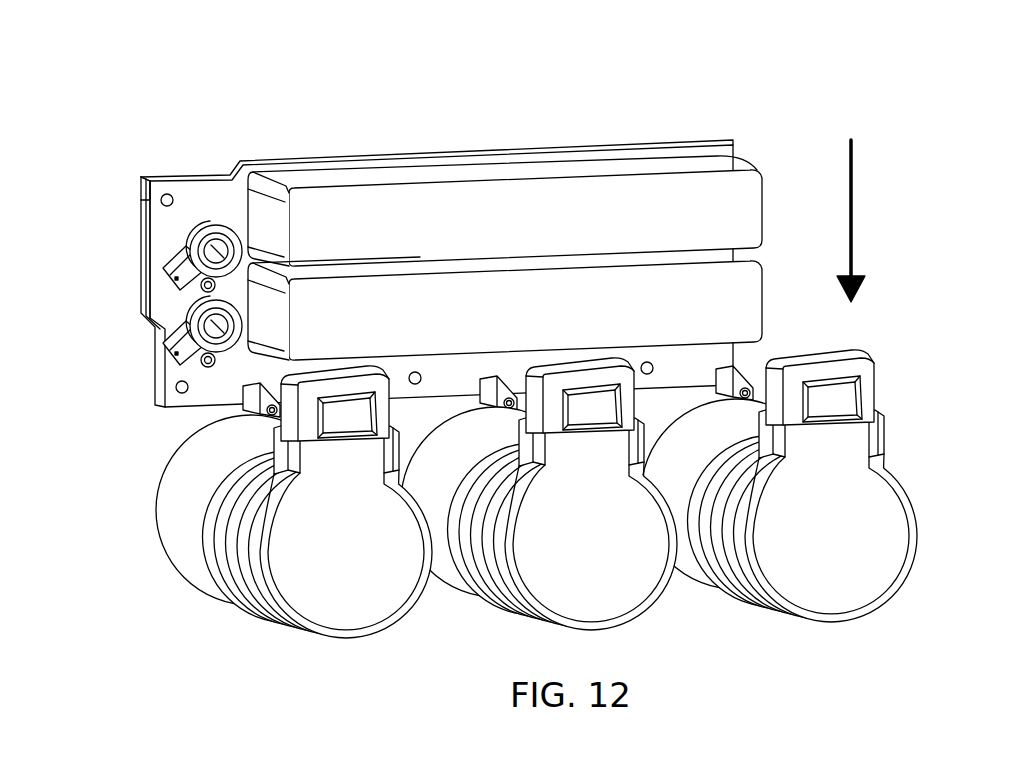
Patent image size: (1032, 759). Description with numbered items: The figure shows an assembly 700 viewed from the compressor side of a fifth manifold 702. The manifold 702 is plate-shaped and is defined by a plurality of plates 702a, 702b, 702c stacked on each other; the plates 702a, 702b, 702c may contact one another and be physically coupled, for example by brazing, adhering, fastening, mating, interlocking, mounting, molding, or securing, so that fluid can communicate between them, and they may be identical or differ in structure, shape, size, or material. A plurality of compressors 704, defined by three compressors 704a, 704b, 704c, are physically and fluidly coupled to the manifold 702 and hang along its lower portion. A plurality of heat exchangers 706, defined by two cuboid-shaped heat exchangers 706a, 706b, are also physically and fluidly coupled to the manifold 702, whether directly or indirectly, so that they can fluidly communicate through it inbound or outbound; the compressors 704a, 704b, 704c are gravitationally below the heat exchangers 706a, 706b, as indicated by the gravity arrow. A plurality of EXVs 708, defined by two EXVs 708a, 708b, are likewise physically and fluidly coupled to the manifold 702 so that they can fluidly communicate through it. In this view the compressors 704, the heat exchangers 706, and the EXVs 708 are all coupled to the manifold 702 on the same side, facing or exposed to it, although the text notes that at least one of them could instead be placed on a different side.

The assembly 700 is at (245, 110).
The fifth manifold 702 is at (397, 242).
The plate 702a is at (139, 185).
The plate 702b is at (146, 208).
The plate 702c is at (152, 193).
The compressors 704 is at (506, 521).
The compressor 704a is at (840, 578).
The compressor 704b is at (620, 582).
The compressor 704c is at (355, 612).
The heat exchangers 706 is at (537, 221).
The heat exchanger 706a is at (652, 163).
The heat exchanger 706b is at (738, 310).
The EXVs 708 is at (132, 289).
The EXV 708a is at (163, 267).
The EXV 708b is at (163, 342).